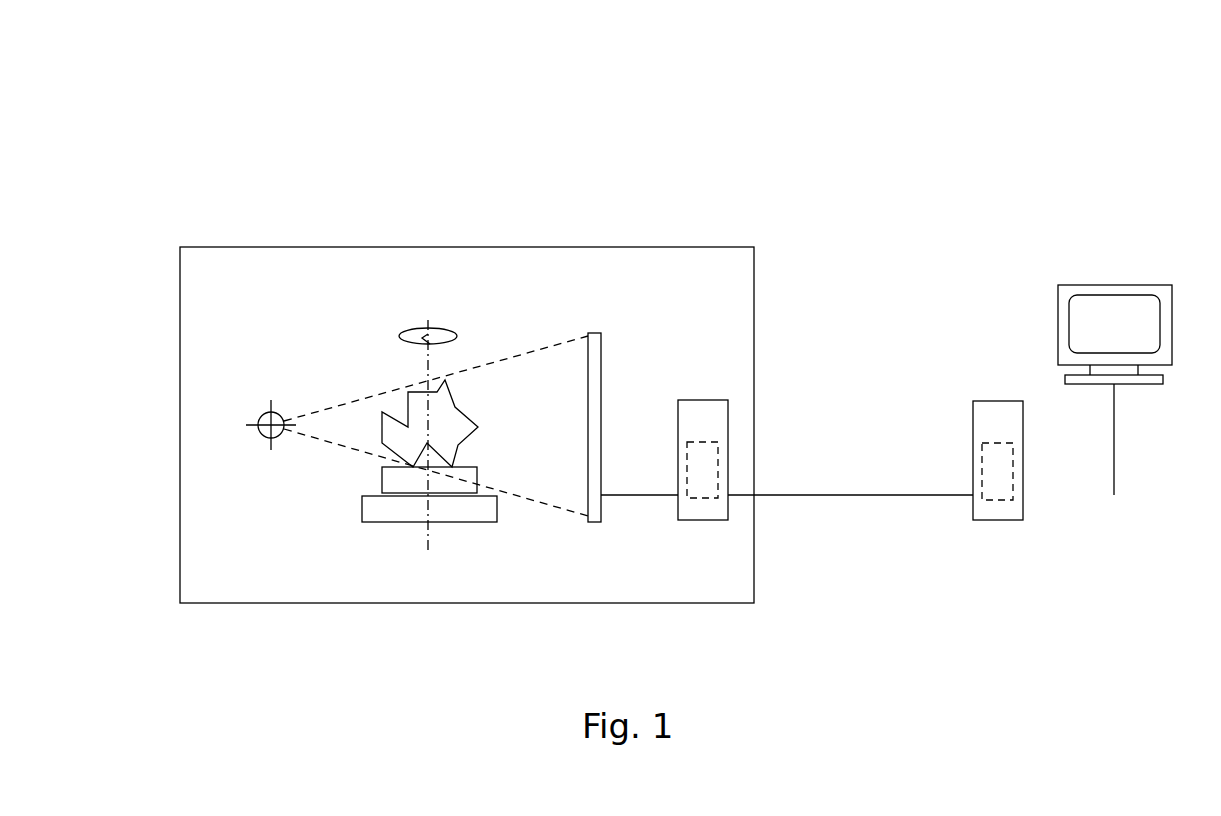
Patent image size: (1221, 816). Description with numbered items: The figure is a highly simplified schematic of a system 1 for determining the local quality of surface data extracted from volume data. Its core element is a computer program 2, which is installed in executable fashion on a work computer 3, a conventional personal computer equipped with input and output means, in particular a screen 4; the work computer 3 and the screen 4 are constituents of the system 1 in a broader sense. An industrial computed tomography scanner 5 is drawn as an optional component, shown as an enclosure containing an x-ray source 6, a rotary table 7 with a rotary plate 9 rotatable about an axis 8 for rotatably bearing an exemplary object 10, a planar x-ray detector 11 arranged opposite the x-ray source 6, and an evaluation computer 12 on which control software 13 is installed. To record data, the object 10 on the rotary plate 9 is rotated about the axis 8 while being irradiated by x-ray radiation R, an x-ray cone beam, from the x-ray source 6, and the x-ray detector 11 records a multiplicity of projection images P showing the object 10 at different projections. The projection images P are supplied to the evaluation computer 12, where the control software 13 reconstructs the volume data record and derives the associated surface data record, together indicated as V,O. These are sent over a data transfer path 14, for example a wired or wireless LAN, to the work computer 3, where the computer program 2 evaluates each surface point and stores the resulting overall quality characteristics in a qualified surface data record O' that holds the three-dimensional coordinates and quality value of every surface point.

The system 1 is at (766, 128).
The computer program 2 is at (1003, 502).
The work computer 3 is at (984, 401).
The screen 4 is at (1147, 285).
The industrial computed tomography scanner 5 is at (203, 247).
The x-ray source 6 is at (262, 417).
The rotary table 7 is at (360, 507).
The axis 8 is at (430, 533).
The rotary plate 9 is at (474, 467).
The object 10 is at (408, 410).
The planar x-ray detector 11 is at (601, 342).
The evaluation computer 12 is at (693, 400).
The control software 13 is at (706, 500).
The data transfer path 14 is at (868, 495).
The x-ray radiation R is at (521, 358).
The projection images P is at (641, 496).
The volume data record and surface data record V,O is at (708, 458).
The qualified surface data record O' is at (1090, 456).